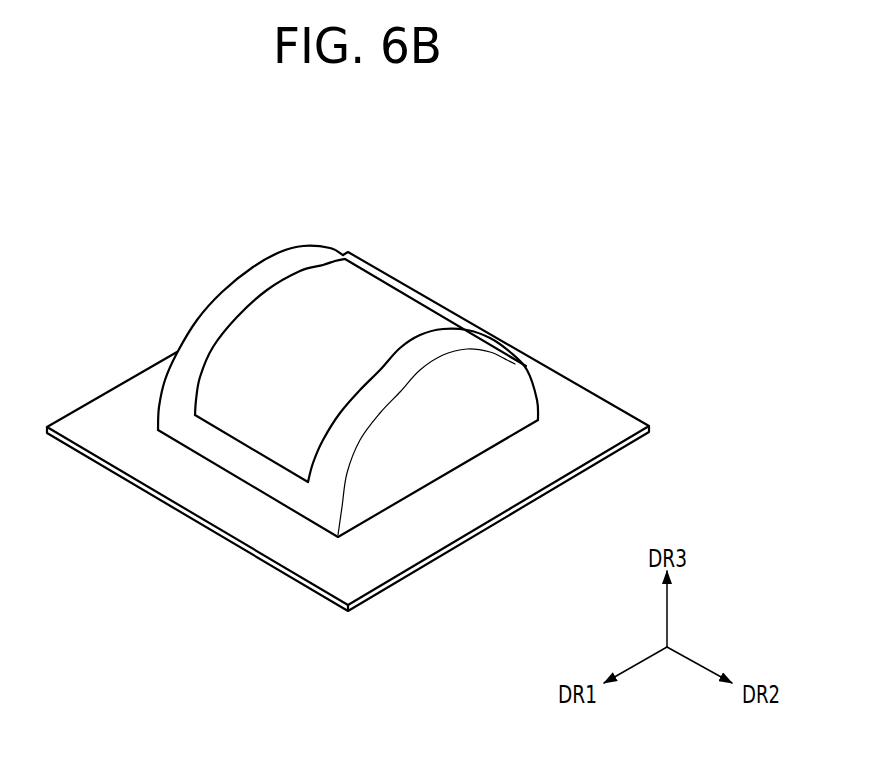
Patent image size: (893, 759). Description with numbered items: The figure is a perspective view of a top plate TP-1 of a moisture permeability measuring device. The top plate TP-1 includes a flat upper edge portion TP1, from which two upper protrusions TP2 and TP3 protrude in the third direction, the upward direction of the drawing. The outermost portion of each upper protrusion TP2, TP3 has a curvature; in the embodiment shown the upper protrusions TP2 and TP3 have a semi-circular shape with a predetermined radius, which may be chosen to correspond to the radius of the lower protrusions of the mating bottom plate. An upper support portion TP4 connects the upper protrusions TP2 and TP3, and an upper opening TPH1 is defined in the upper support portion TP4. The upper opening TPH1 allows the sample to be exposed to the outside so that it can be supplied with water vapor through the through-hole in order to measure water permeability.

The top plate TP-1 is at (522, 188).
The upper edge portion TP1 is at (602, 417).
The upper protrusion TP2 is at (505, 375).
The upper protrusion TP3 is at (252, 265).
The upper support portion TP4 is at (327, 492).
The upper opening TPH1 is at (397, 317).